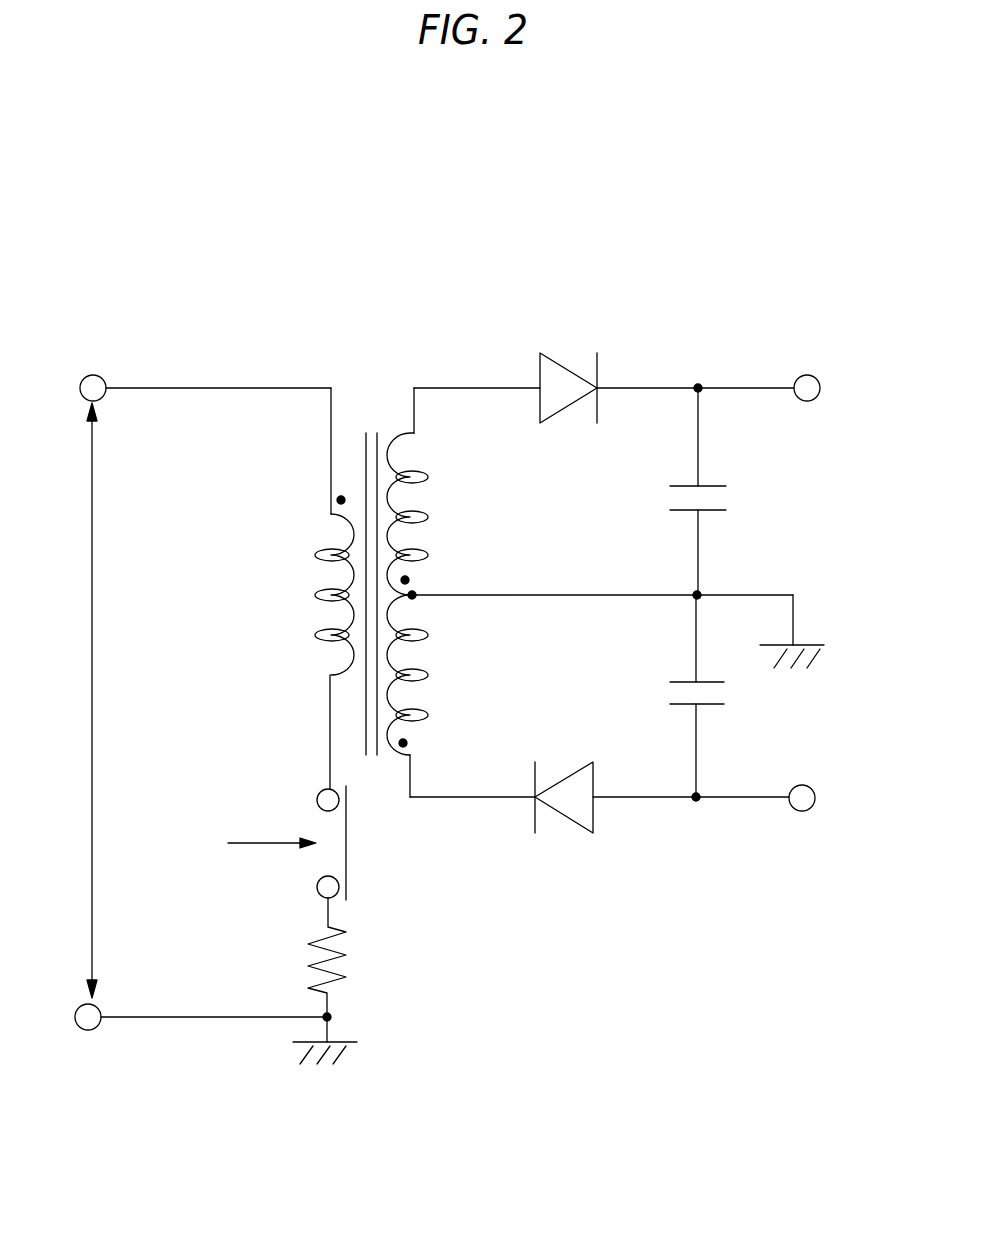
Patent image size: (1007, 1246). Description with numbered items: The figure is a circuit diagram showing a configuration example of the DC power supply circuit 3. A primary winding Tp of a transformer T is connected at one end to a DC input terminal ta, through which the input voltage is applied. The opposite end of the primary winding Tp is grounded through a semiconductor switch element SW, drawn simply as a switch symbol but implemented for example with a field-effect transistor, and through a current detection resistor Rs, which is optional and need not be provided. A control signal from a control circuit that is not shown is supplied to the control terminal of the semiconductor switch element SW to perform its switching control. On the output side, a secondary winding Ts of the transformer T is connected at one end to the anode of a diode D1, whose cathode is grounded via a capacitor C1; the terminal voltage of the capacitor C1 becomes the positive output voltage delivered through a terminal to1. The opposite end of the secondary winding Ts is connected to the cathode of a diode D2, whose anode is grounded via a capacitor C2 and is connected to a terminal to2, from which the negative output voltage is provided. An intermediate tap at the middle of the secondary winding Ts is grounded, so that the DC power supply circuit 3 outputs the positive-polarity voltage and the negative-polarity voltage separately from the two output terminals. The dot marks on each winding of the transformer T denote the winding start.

The DC power supply circuit 3 is at (806, 198).
The DC input terminal ta is at (98, 376).
The transformer T is at (417, 318).
The primary winding Tp is at (352, 514).
The secondary winding Ts is at (402, 433).
The diode D1 is at (553, 358).
The diode D2 is at (578, 767).
The capacitor C1 is at (686, 486).
The capacitor C2 is at (683, 682).
The terminal to1 is at (821, 389).
The terminal to2 is at (816, 798).
The semiconductor switch element SW is at (357, 843).
The current detection resistor Rs is at (345, 975).